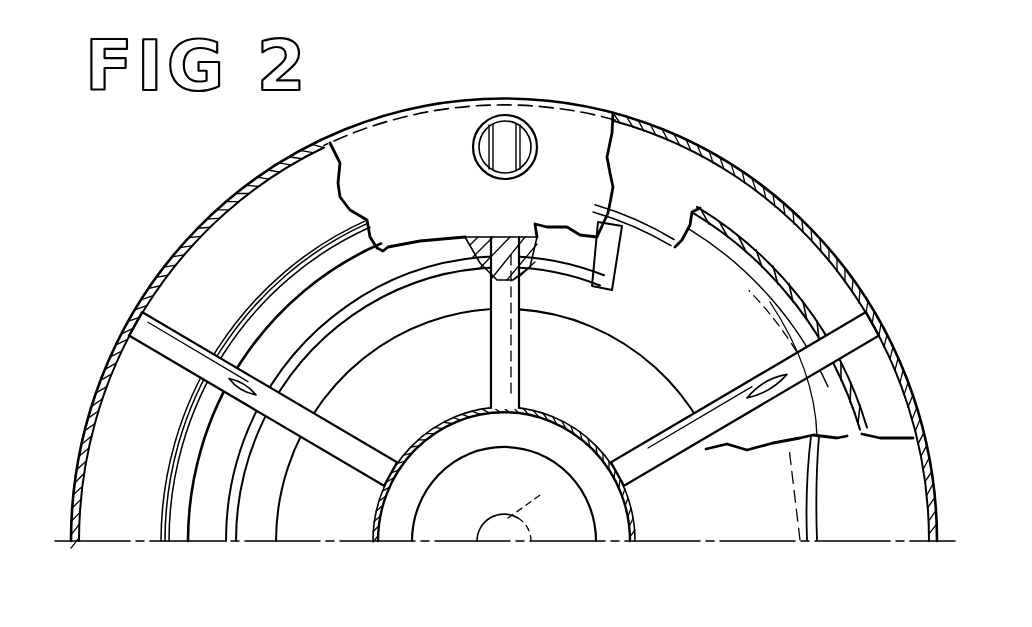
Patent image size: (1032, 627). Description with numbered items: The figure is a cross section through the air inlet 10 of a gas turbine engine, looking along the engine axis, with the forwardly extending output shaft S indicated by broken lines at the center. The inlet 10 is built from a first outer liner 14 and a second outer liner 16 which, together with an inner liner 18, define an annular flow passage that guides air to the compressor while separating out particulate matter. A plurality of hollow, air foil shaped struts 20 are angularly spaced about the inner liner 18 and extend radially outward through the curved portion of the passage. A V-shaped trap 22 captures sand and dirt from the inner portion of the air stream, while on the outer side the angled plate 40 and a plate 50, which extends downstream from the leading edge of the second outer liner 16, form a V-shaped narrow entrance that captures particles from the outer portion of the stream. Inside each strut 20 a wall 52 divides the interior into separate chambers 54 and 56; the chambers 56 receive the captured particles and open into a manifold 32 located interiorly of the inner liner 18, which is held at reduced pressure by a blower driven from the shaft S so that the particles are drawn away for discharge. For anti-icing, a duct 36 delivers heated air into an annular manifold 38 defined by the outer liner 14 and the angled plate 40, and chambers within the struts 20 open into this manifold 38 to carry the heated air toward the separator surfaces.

The air inlet 10 is at (503, 323).
The first outer liner 14 is at (930, 513).
The second outer liner 16 is at (615, 267).
The inner liner 18 is at (563, 422).
The struts 20 is at (490, 367).
The V-shaped trap 22 is at (766, 462).
The manifold 32 is at (422, 500).
The duct 36 is at (537, 150).
The annular manifold 38 is at (301, 233).
The angled plate 40 is at (763, 258).
The plate 50 is at (280, 282).
The wall 52 is at (233, 384).
The strut chamber 54 is at (163, 342).
The strut chamber 56 is at (241, 384).
The output shaft S is at (534, 501).